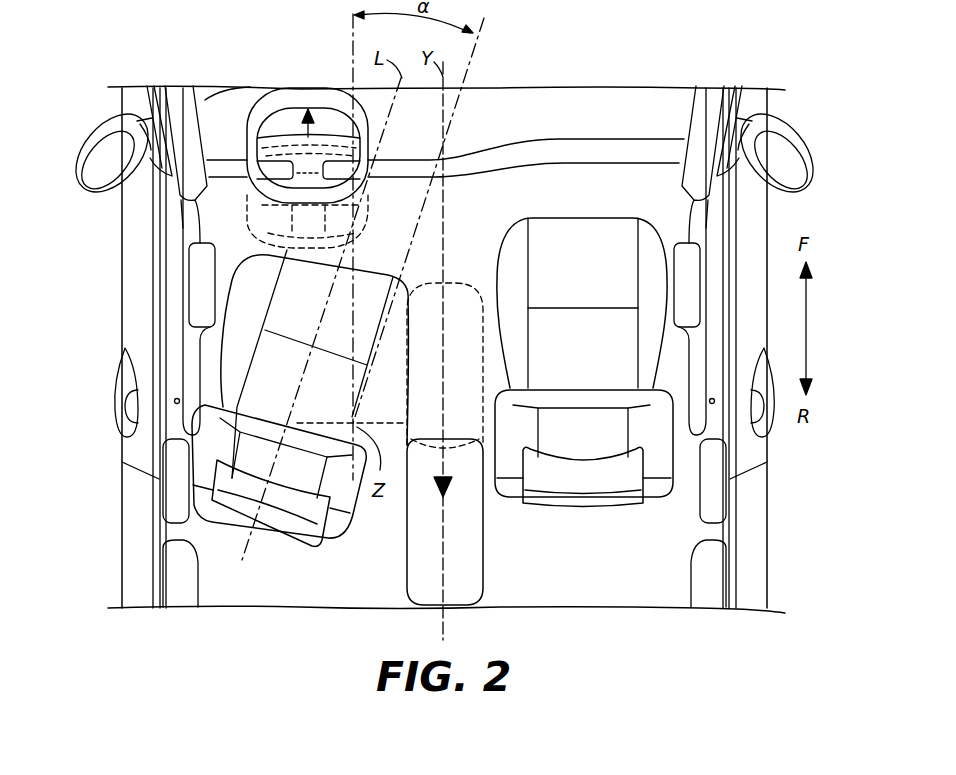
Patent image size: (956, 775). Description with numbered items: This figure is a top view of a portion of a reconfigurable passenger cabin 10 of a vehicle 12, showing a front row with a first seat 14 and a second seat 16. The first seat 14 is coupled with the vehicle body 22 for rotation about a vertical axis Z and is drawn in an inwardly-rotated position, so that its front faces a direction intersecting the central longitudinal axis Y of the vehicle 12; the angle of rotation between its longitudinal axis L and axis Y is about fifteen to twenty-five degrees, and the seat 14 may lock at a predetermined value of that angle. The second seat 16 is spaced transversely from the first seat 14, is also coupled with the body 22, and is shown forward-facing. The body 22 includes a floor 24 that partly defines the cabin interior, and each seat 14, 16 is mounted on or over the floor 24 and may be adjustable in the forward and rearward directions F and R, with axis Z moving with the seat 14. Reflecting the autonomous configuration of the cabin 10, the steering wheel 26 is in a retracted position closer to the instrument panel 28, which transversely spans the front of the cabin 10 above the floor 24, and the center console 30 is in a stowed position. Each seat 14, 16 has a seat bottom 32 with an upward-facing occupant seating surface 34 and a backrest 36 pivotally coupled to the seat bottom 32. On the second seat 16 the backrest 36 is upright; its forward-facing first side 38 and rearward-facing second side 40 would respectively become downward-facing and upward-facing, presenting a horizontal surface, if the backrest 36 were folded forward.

The passenger cabin 10 is at (533, 180).
The vehicle 12 is at (184, 65).
The first seat 14 is at (320, 543).
The second seat 16 is at (648, 493).
The vehicle body 22 is at (720, 486).
The floor 24 is at (220, 228).
The steering wheel 26 is at (290, 110).
The instrument panel 28 is at (525, 108).
The center console 30 is at (458, 590).
The seat bottom 32 is at (597, 233).
The occupant seating surface 34 is at (567, 299).
The backrest 36 is at (513, 497).
The first side of the backrest 38 is at (573, 432).
The second side of the backrest 40 is at (600, 507).